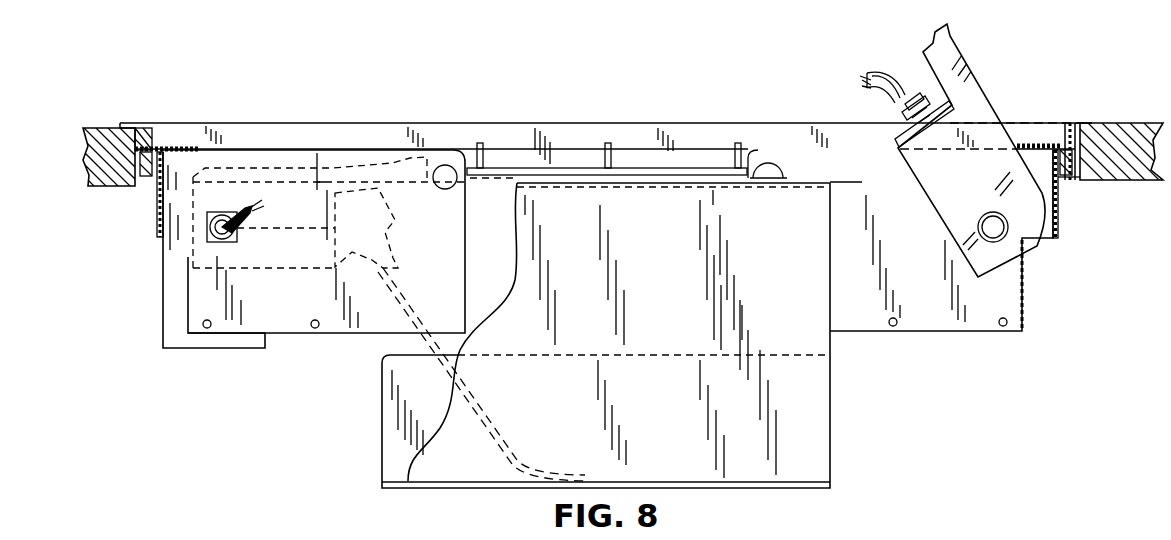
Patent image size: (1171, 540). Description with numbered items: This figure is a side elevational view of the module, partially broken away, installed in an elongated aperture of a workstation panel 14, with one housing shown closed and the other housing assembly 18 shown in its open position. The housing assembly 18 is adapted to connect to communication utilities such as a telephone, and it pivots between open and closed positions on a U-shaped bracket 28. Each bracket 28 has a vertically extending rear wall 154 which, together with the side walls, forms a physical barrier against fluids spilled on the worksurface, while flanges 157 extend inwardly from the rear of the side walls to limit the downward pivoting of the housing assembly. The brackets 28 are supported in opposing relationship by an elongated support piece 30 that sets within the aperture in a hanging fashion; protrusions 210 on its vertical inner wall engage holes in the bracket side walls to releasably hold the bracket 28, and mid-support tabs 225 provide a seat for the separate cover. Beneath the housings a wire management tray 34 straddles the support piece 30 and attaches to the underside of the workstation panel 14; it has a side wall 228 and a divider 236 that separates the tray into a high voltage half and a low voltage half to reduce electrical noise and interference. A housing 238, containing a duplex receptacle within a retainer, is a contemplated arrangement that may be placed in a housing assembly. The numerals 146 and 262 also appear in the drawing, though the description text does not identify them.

The workstation panel 14 is at (83, 145).
The support piece 30 is at (207, 123).
The bracket 28 is at (348, 335).
The housing 238 is at (288, 170).
The connector cable 146 is at (397, 225).
The mid-support tabs 225 is at (612, 165).
The protrusions 210 is at (768, 163).
The side wall 228 is at (673, 266).
The wire management tray 34 is at (831, 430).
The divider 236 is at (382, 420).
The housing assembly 18 is at (986, 100).
The rear wall 154 is at (1058, 226).
The flanges 157 is at (1025, 318).
The component 262 is at (203, 539).